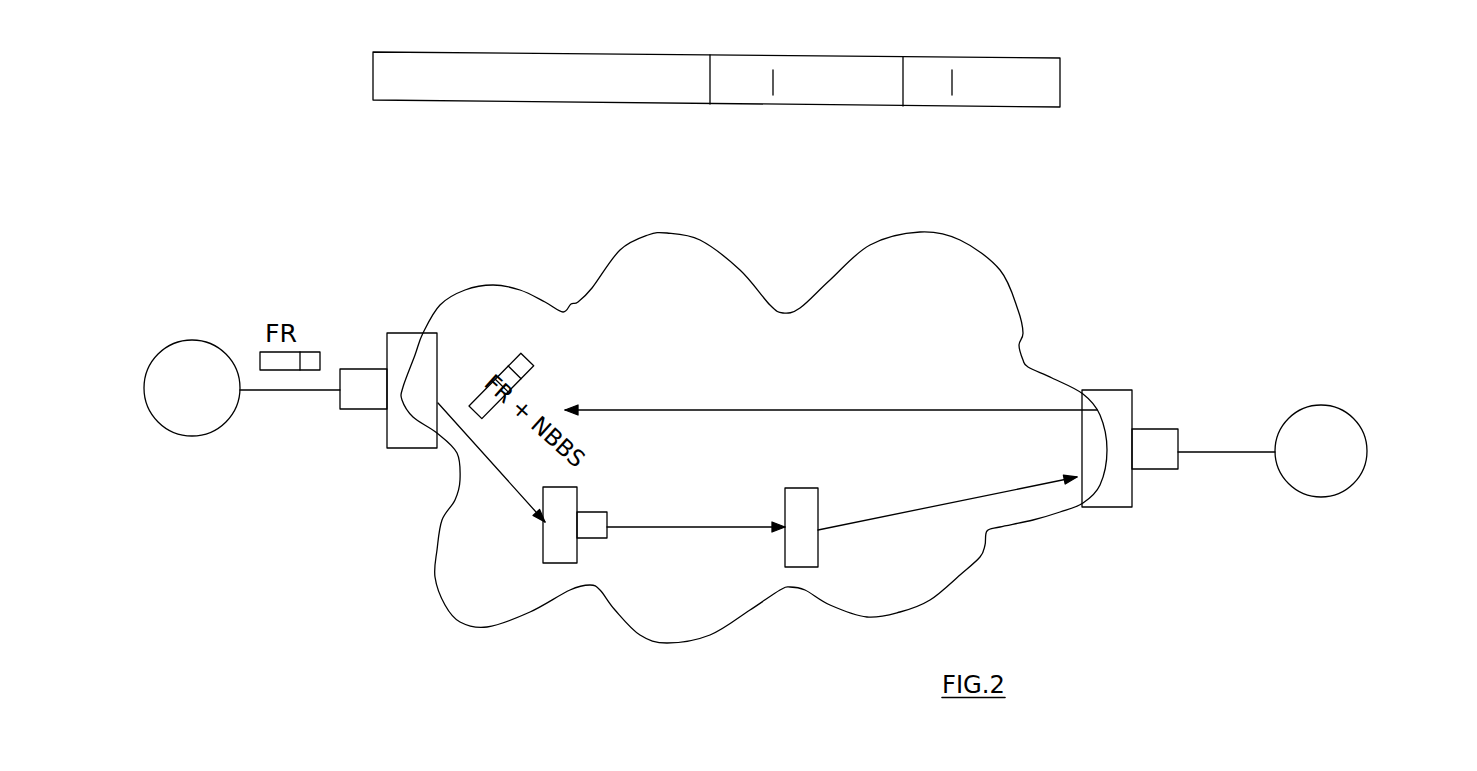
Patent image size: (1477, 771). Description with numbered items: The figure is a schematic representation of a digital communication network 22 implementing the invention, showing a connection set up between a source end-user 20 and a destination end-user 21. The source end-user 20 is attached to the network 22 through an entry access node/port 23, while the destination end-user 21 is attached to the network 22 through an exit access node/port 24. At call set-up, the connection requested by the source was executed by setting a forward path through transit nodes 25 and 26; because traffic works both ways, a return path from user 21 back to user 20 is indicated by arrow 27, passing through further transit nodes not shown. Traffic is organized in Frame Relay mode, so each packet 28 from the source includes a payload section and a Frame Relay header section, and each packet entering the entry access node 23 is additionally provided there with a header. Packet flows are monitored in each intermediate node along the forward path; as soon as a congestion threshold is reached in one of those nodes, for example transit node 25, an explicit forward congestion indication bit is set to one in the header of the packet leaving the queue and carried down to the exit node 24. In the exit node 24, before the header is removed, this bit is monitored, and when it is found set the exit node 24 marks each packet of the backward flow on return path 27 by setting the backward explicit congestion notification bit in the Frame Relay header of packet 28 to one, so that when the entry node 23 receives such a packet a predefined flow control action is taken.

The source end-user 20 is at (207, 342).
The destination end-user 21 is at (1337, 403).
The digital communication network 22 is at (992, 262).
The entry access node/port 23 is at (403, 333).
The exit access node/port 24 is at (1118, 390).
The transit node 25 is at (580, 495).
The transit node 26 is at (820, 497).
The return path 27 is at (810, 410).
The packet 28 is at (602, 104).